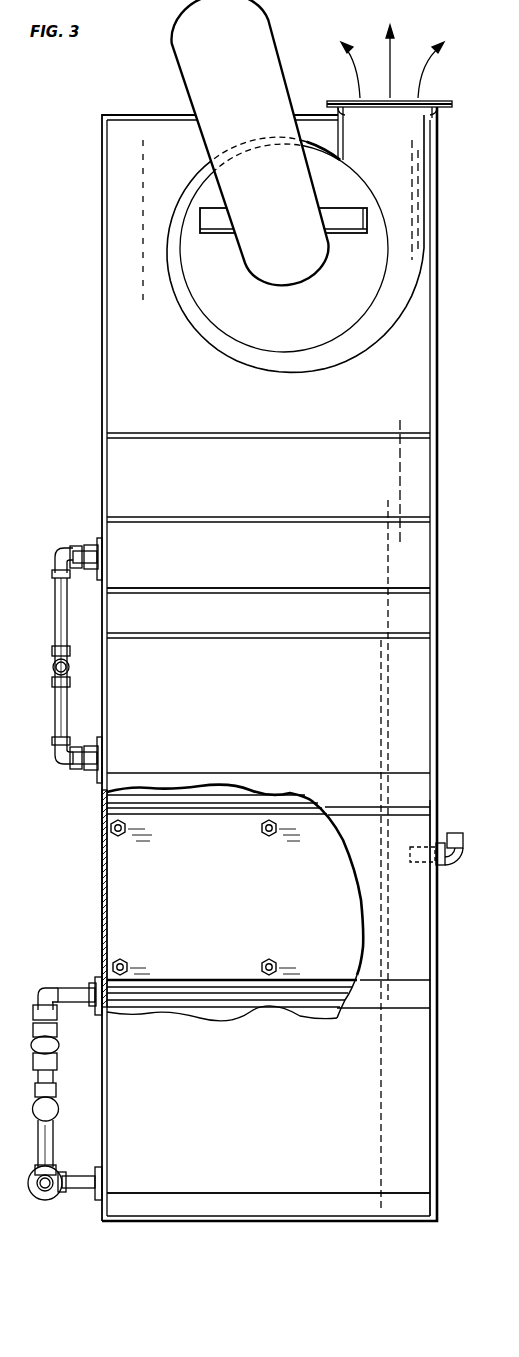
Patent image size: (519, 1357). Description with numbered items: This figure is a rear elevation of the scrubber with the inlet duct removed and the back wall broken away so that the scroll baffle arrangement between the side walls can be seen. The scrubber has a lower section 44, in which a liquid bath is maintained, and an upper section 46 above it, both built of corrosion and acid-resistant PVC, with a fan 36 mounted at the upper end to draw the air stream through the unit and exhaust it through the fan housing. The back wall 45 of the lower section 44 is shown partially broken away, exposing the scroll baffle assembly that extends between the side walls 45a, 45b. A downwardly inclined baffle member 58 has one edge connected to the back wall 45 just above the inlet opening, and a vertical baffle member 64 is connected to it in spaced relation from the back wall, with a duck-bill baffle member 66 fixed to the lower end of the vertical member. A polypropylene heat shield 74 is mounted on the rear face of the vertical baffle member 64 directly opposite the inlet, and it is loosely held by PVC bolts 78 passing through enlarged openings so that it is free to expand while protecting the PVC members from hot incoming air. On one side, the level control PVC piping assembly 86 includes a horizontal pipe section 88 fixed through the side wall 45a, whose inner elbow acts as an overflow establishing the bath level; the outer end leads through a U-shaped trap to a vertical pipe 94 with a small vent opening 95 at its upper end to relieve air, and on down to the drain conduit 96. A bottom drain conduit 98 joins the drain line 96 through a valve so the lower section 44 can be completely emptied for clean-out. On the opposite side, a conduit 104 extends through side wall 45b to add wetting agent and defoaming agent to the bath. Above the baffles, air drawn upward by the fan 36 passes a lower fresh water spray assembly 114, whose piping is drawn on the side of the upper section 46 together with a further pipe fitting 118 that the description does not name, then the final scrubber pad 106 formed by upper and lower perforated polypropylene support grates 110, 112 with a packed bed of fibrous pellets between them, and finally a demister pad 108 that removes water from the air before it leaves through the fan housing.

The fan 36 is at (269, 312).
The upper section 46 is at (269, 394).
The demister pad 108 is at (415, 490).
The upper perforated polypropylene support grate 110 is at (285, 588).
The final scrubber pad 106 is at (418, 618).
The lower perforated polypropylene support grate 112 is at (312, 640).
The upper pipe fitting 118 is at (95, 541).
The lower fresh water spray assembly 114 is at (93, 776).
The downwardly inclined baffle member 58 is at (180, 793).
The vertical baffle member 64 is at (107, 813).
The heat shield 74 is at (176, 906).
The PVC bolts 78 is at (262, 830).
The duck-bill baffle member 66 is at (183, 1007).
The side wall 45a is at (103, 906).
The side wall 45b is at (437, 928).
The back wall 45 is at (219, 1091).
The lower section 44 is at (435, 1040).
The conduit 104 is at (463, 852).
The horizontal pipe section 88 is at (77, 985).
The vent opening 95 is at (57, 1009).
The vertical pipe 94 is at (59, 1096).
The level control PVC piping assembly 86 is at (62, 1098).
The bottom drain conduit 98 is at (83, 1177).
The drain conduit 96 is at (47, 1193).